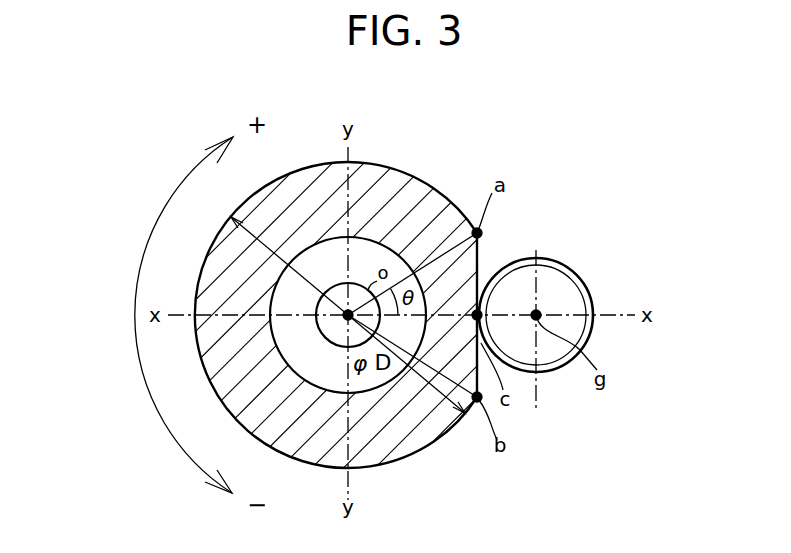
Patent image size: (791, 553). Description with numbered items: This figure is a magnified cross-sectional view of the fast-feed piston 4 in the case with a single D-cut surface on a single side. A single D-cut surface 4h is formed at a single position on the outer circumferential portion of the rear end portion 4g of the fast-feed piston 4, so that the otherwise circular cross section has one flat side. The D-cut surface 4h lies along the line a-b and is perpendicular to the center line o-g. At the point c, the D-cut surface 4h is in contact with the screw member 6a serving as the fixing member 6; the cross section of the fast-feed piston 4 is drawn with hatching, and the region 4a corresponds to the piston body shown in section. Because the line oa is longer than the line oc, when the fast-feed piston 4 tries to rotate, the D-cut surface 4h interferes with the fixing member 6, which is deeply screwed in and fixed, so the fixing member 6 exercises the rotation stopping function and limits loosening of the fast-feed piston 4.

The fast-feed piston 4 is at (385, 440).
The shaft portion of workpiece 4a is at (320, 276).
The rear end portion 4g is at (447, 198).
The D-cut surface 4h is at (481, 262).
The fixing member 6 is at (567, 310).
The screw member 6a is at (560, 293).